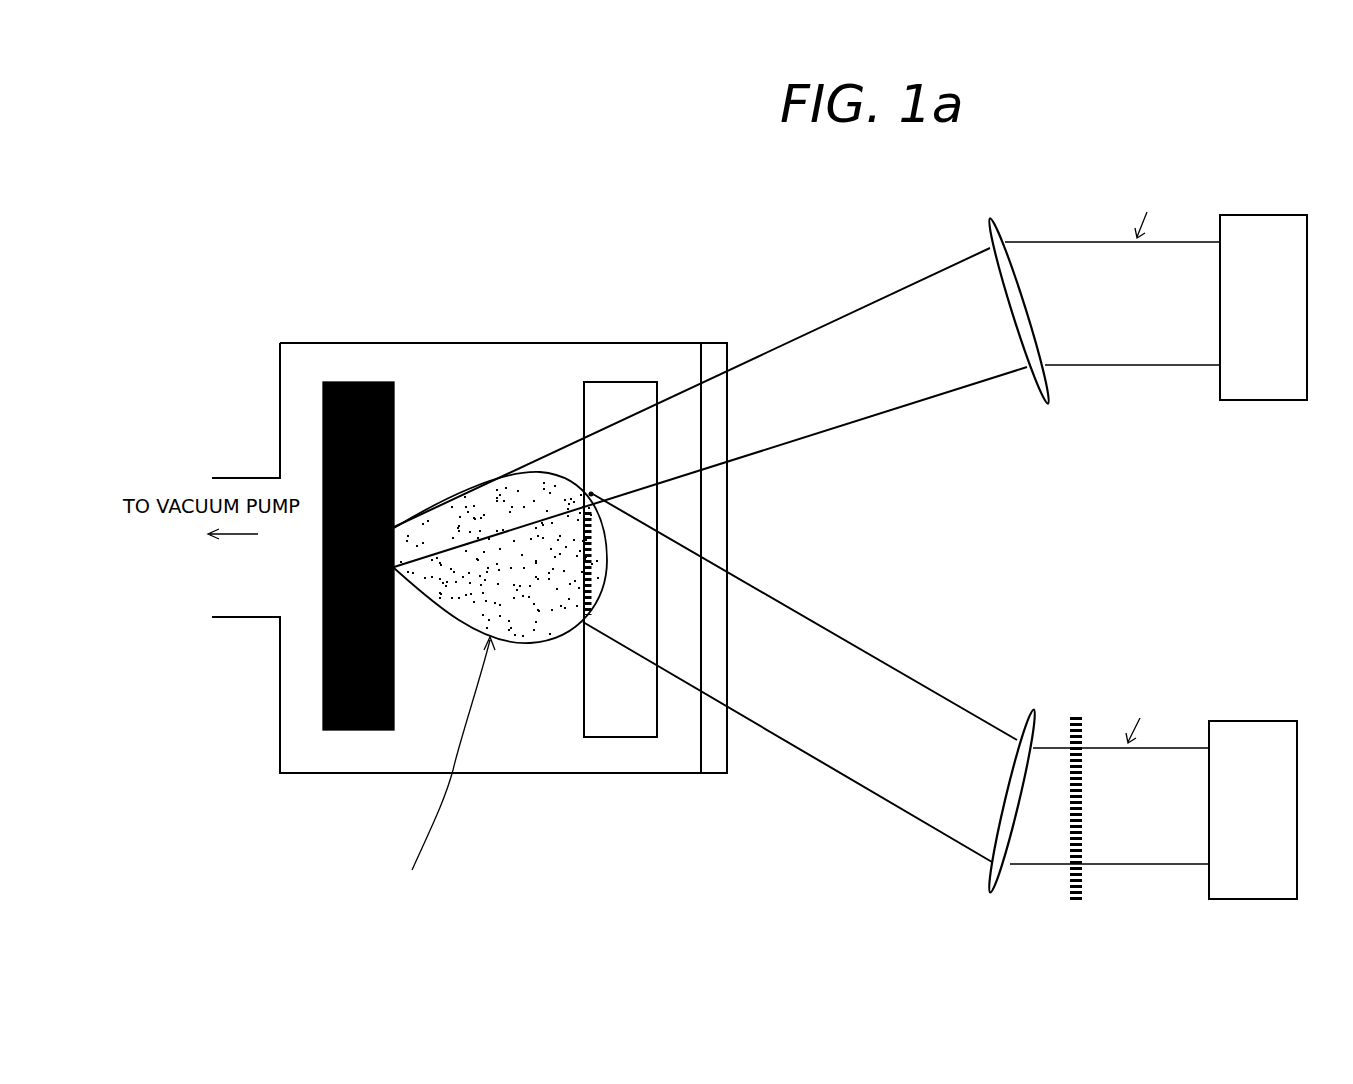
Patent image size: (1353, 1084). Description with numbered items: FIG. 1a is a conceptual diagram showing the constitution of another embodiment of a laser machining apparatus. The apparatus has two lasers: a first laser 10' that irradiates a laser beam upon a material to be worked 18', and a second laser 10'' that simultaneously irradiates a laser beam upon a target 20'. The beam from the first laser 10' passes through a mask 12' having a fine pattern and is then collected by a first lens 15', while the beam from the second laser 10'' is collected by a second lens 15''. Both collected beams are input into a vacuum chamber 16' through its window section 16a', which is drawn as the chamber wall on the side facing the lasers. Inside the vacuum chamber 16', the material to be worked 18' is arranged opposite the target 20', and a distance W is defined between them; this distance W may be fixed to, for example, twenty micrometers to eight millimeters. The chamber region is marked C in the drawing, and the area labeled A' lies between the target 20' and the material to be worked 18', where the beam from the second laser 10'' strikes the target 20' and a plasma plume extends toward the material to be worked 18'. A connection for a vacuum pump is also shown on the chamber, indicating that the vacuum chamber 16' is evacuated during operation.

The first laser 10' is at (1161, 784).
The second laser 10'' is at (1164, 282).
The mask 12' is at (1099, 836).
The first lens 15' is at (812, 724).
The second lens 15'' is at (748, 391).
The vacuum chamber 16' is at (469, 588).
The window section 16a' is at (729, 591).
The material to be worked 18' is at (628, 610).
The target 20' is at (358, 606).
The deposition area A' is at (450, 687).
The chamber C is at (323, 395).
The distance W is at (584, 382).